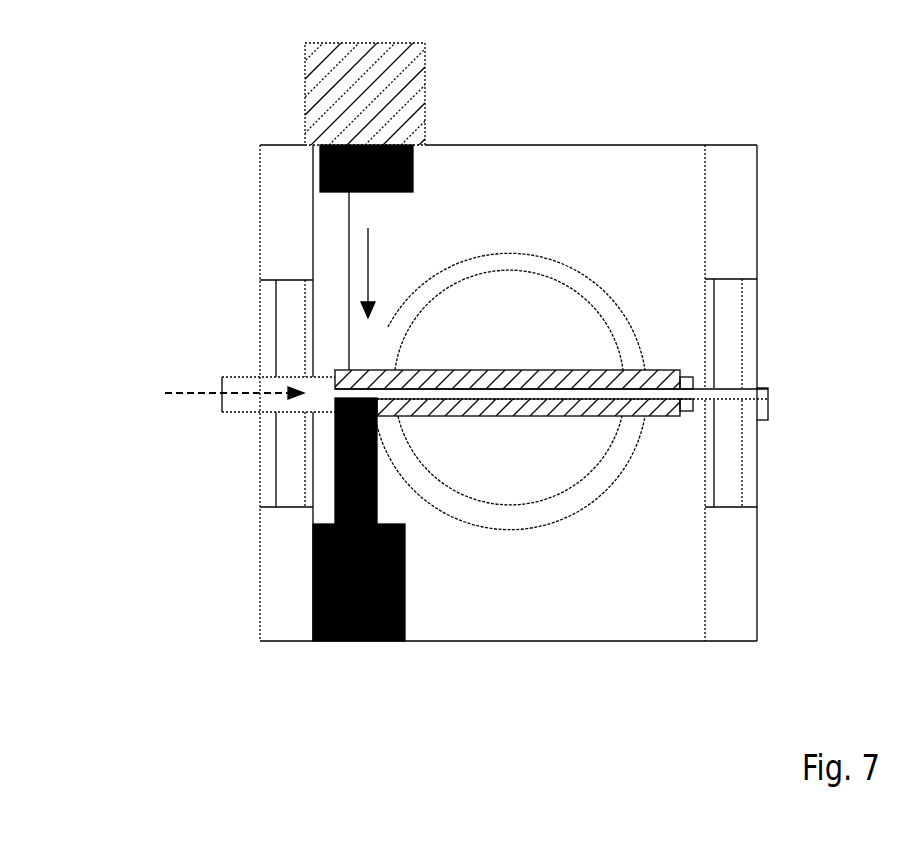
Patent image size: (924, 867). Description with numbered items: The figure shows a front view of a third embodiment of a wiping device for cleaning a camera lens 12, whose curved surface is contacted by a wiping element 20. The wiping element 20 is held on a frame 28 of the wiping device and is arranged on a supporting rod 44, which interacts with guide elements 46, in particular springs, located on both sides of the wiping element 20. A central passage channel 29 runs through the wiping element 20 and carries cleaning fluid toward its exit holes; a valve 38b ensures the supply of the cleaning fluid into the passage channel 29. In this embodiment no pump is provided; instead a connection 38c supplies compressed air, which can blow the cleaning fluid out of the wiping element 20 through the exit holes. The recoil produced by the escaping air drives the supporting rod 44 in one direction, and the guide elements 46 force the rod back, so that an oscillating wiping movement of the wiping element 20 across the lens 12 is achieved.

The lens 12 is at (547, 470).
The wiping element 20 is at (607, 377).
The frame 28 is at (735, 188).
The passage channel 29 is at (500, 395).
The supporting rod 44 is at (758, 402).
The guide elements 46 is at (723, 343).
The valve 38b is at (338, 641).
The connection 38c is at (240, 402).